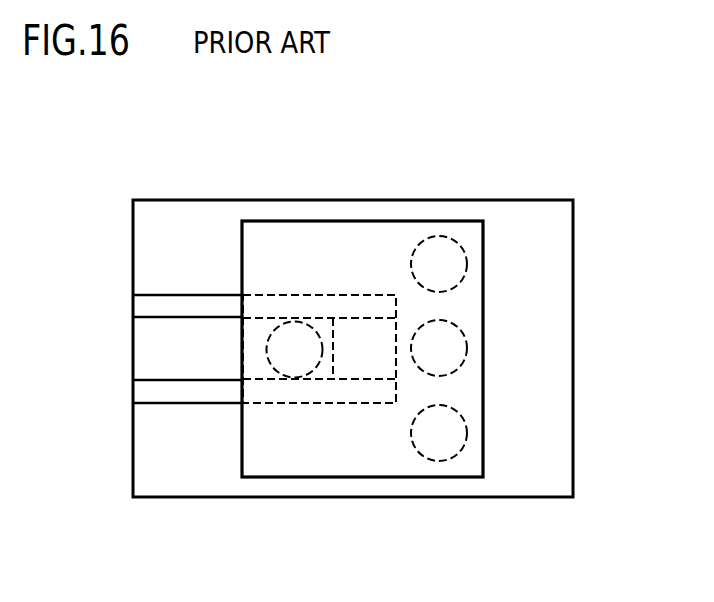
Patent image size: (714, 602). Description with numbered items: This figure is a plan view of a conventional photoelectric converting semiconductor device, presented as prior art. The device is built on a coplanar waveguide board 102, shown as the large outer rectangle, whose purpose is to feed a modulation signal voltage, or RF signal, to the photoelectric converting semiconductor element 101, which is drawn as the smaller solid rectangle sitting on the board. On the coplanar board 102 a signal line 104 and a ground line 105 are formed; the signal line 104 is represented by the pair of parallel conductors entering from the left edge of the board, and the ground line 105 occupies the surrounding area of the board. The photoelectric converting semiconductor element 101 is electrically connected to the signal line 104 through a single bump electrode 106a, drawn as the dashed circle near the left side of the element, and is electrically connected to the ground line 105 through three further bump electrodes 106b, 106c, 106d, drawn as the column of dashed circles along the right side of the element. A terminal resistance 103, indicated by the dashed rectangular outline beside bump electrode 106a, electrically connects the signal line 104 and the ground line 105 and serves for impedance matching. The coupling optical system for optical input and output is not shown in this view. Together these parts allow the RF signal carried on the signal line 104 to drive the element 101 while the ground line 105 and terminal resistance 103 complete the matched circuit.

The photoelectric converting semiconductor element 101 is at (265, 220).
The coplanar waveguide board 102 is at (547, 231).
The terminal resistance 103 is at (365, 357).
The signal line 104 is at (172, 352).
The ground line 105 is at (172, 252).
The bump electrode 106a is at (295, 350).
The bump electrode 106b is at (439, 264).
The bump electrode 106c is at (439, 348).
The bump electrode 106d is at (439, 433).